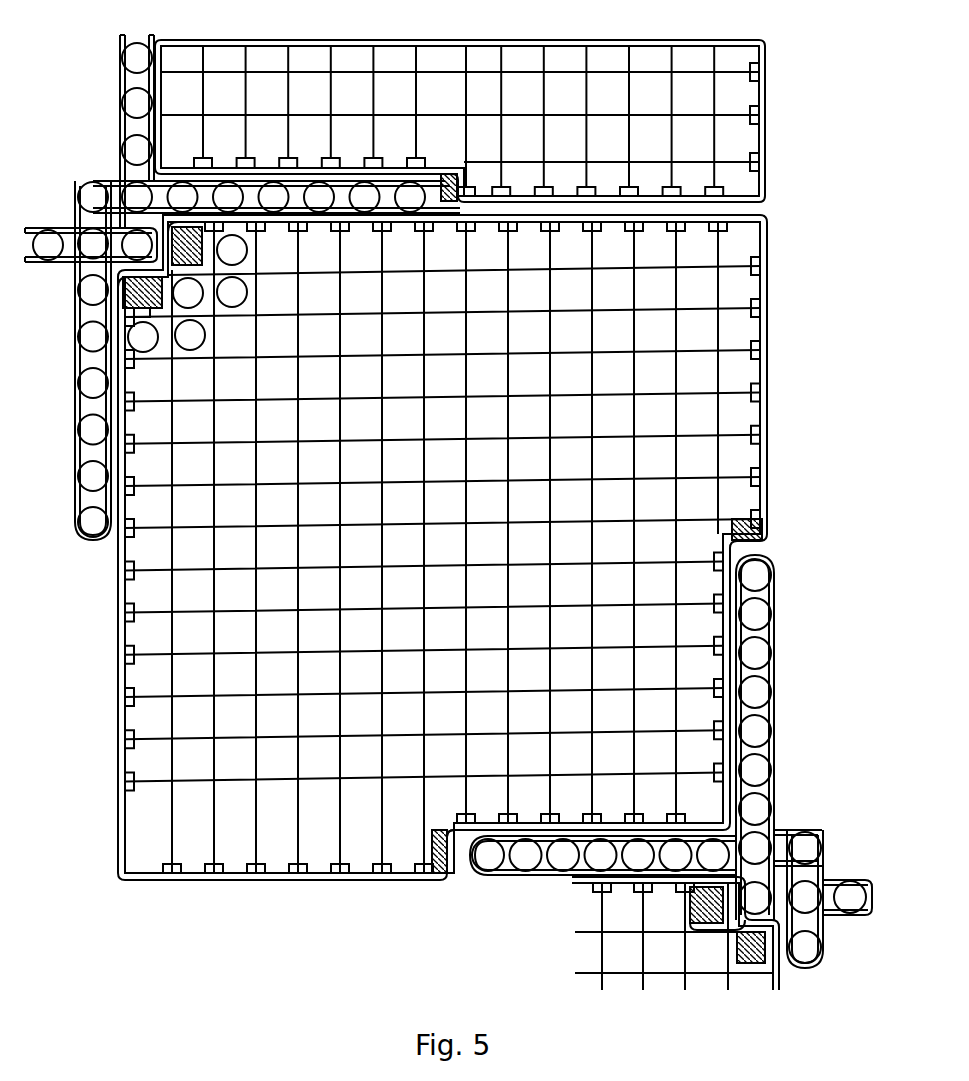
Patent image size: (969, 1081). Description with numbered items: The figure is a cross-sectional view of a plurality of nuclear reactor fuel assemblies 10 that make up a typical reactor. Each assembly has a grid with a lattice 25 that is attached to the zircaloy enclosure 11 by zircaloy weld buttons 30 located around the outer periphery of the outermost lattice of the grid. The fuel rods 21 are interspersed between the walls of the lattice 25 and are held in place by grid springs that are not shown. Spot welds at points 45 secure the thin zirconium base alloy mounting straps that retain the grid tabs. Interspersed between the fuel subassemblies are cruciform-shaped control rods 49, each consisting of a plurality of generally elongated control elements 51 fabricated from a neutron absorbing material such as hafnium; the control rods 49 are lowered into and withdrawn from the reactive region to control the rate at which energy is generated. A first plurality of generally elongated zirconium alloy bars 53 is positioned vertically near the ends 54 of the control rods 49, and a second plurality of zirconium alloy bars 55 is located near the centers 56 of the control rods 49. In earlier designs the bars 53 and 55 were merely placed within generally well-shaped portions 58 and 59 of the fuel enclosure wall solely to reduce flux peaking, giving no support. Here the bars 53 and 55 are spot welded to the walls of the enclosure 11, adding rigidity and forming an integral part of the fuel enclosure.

The panel assembly 10 is at (106, 732).
The enclosure 11 is at (118, 594).
The fuel rods 21 is at (232, 307).
The lattice 25 is at (236, 486).
The weld buttons 30 is at (139, 424).
The spot weld points 45 is at (768, 362).
The control rods 49 is at (77, 213).
The control elements 51 is at (127, 150).
The first plurality of zirconium alloy bars 53 is at (456, 192).
The ends of the control rods 54 is at (494, 868).
The second plurality of zirconium alloy bars 55 is at (162, 293).
The centers of the control rods 56 is at (126, 222).
The well-shaped portion 58 is at (457, 858).
The well-shaped portion 59 is at (157, 310).